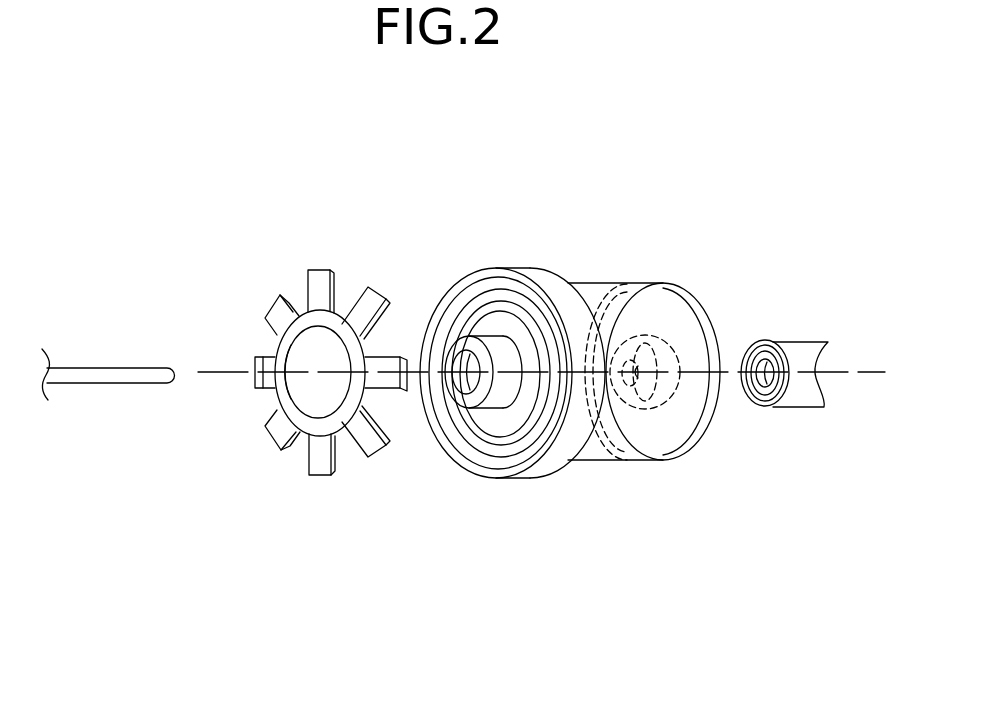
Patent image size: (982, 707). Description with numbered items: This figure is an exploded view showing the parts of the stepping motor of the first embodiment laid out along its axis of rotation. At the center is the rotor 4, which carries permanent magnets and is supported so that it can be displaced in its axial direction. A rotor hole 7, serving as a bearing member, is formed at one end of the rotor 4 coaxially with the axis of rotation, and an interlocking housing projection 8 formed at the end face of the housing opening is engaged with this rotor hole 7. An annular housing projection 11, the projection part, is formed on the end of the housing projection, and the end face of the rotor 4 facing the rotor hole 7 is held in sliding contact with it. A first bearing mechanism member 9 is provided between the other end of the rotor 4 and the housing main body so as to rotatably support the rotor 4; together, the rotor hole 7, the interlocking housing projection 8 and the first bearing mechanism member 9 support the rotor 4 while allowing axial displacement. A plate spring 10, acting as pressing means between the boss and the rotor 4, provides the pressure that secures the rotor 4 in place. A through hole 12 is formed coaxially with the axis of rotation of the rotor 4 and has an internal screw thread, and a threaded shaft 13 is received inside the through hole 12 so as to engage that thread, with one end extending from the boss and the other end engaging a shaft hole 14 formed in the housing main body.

The shaft 13 is at (119, 372).
The plate spring 10 is at (320, 268).
The first bearing mechanism member 9 is at (485, 268).
The through hole 12 is at (448, 395).
The rotor 4 is at (610, 288).
The rotor hole 7 is at (677, 343).
The interlocking housing projection 8 is at (813, 352).
The annular housing projection 11 is at (777, 340).
The shaft hole 14 is at (768, 404).